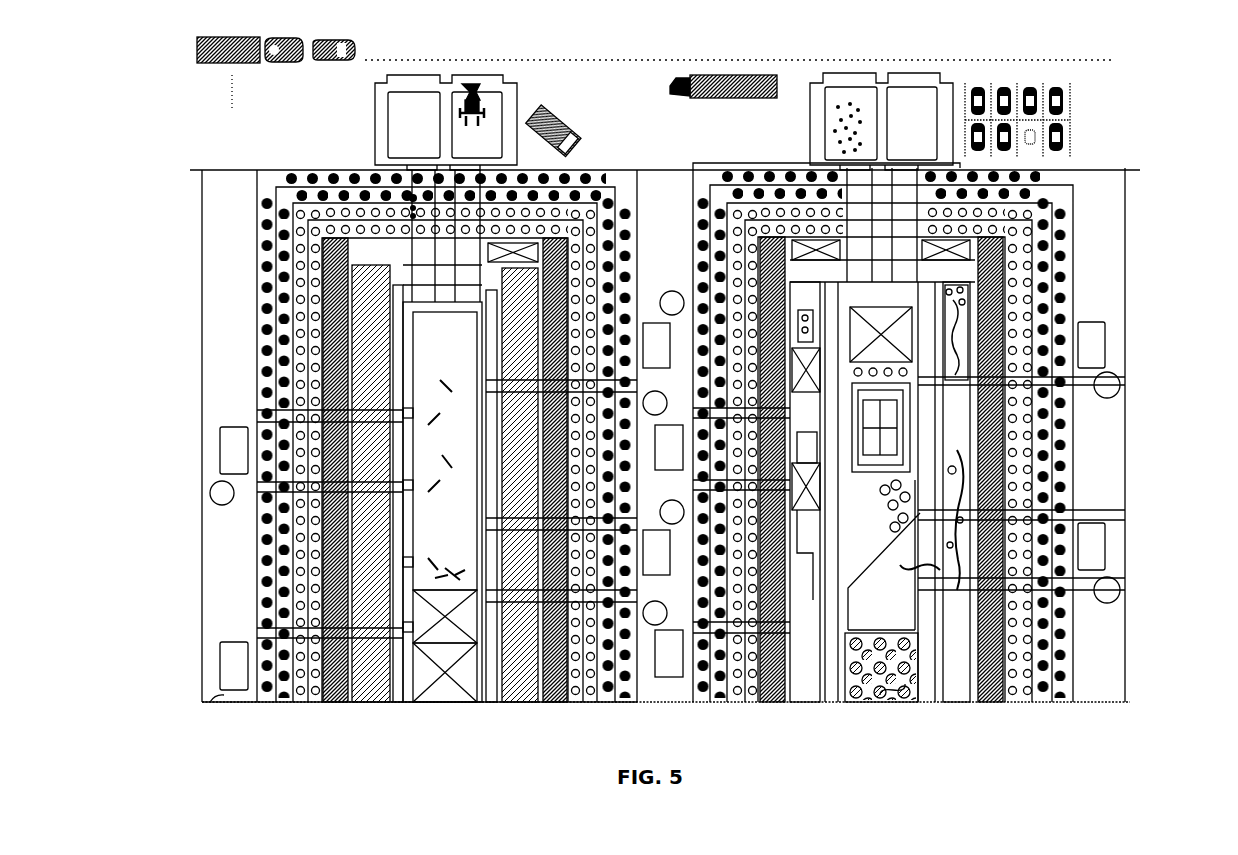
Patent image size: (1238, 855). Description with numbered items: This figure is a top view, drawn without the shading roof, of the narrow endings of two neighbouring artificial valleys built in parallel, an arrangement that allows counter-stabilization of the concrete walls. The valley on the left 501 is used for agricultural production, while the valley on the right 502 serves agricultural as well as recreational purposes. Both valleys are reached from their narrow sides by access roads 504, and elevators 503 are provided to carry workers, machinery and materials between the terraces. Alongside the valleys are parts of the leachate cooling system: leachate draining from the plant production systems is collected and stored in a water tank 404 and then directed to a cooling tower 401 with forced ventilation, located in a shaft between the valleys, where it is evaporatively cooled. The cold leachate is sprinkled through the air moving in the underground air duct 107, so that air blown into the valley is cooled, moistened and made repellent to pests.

The valley on the left 501 is at (257, 247).
The valley on the right 502 is at (1073, 232).
The cooling tower 401 is at (228, 447).
The water tank 404 is at (210, 488).
The underground air duct 107 is at (327, 702).
The elevators 503 is at (431, 137).
The access roads 504 is at (304, 101).